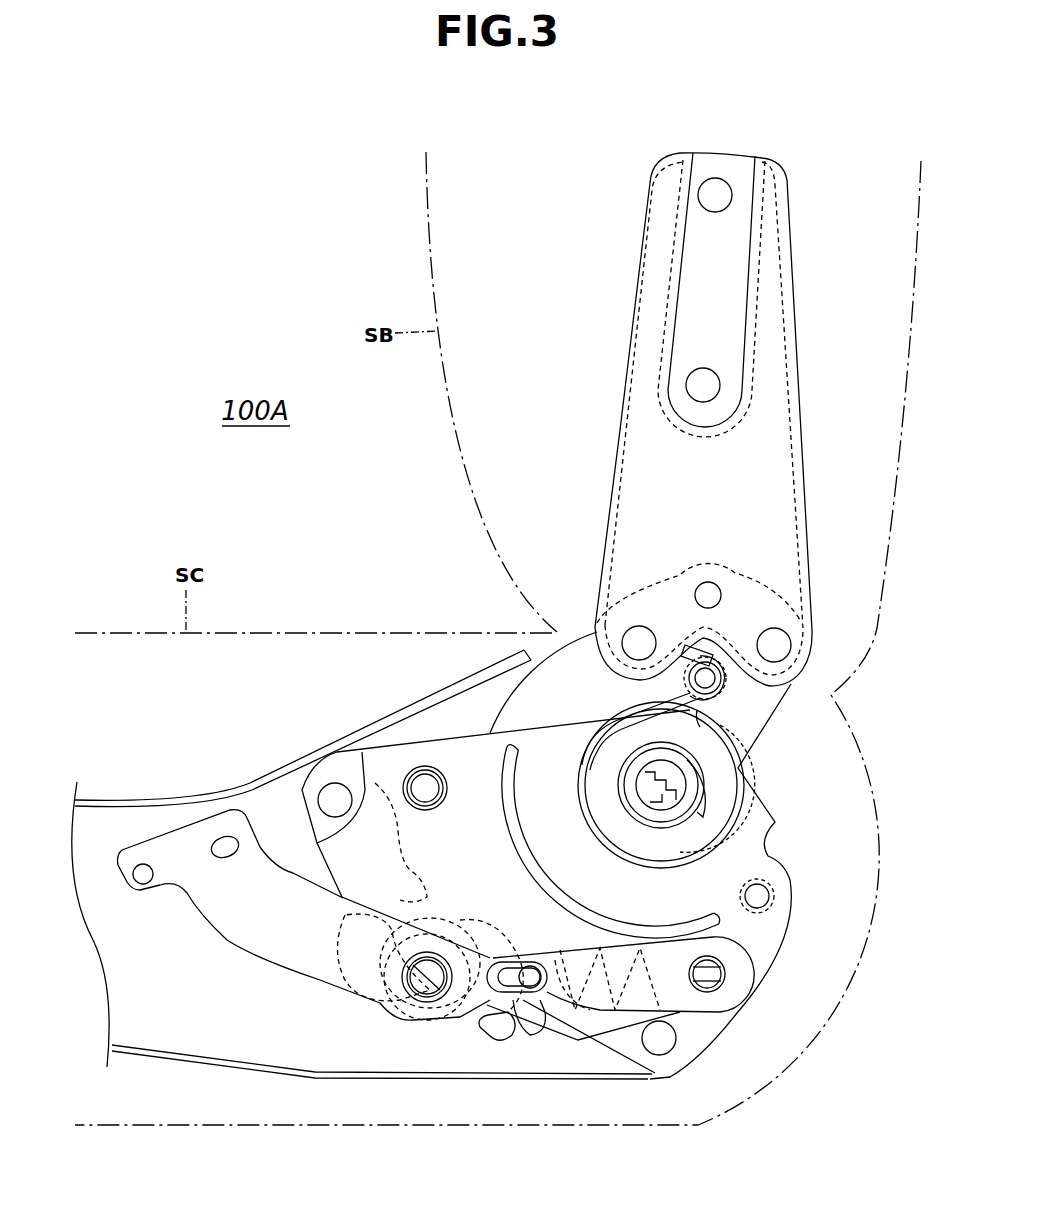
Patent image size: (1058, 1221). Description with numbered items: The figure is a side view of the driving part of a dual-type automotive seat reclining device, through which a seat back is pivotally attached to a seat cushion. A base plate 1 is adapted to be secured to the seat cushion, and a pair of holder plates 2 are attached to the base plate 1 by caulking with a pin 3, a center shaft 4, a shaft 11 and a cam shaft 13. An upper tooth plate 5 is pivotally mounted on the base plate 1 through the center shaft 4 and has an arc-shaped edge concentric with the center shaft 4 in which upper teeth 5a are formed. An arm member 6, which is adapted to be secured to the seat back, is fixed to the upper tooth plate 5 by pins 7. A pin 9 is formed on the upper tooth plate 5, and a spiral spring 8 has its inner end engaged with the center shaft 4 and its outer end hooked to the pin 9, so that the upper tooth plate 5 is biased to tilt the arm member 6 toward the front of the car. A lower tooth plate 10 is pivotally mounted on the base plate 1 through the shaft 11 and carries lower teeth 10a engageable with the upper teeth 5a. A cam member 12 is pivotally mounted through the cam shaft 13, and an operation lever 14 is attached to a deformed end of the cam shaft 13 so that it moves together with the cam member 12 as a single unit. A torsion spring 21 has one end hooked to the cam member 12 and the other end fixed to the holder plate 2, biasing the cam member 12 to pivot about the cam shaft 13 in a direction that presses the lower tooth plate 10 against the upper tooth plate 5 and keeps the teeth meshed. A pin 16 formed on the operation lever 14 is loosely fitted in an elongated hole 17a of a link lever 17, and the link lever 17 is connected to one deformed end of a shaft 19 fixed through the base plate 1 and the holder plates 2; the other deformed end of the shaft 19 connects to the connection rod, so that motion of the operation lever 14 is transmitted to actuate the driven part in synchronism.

The base plate 1 is at (268, 800).
The holder plates 2 is at (776, 874).
The pin 3 is at (659, 1045).
The center shaft 4 is at (700, 759).
The upper tooth plate 5 is at (516, 705).
The upper teeth 5a is at (562, 897).
The arm member 6 is at (787, 393).
The pins 7 is at (639, 640).
The spiral spring 8 is at (735, 812).
The pin 9 is at (728, 684).
The lower tooth plate 10 is at (420, 862).
The lower teeth 10a is at (540, 907).
The shaft 11 is at (420, 770).
The cam member 12 is at (430, 895).
The cam shaft 13 is at (422, 985).
The operation lever 14 is at (185, 840).
The pin 16 is at (530, 988).
The link lever 17 is at (732, 986).
The elongated hole 17a is at (515, 1008).
The shaft 19 is at (718, 975).
The torsion spring 21 is at (500, 1040).